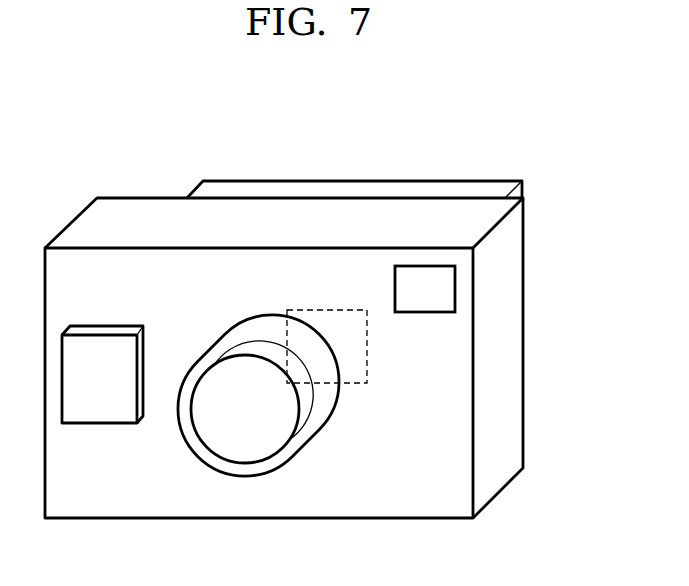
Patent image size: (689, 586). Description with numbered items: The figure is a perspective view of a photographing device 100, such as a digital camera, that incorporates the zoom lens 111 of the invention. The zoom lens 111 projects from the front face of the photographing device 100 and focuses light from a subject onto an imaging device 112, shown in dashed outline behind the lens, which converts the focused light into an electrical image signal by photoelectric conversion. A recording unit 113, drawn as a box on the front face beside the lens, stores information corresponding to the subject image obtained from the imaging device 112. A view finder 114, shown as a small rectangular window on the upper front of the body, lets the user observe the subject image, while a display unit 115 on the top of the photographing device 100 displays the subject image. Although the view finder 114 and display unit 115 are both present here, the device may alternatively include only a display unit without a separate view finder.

The photographing device 100 is at (432, 502).
The zoom lens 111 is at (246, 452).
The imaging device 112 is at (353, 385).
The recording unit 113 is at (107, 418).
The view finder 114 is at (452, 290).
The display unit 115 is at (410, 183).